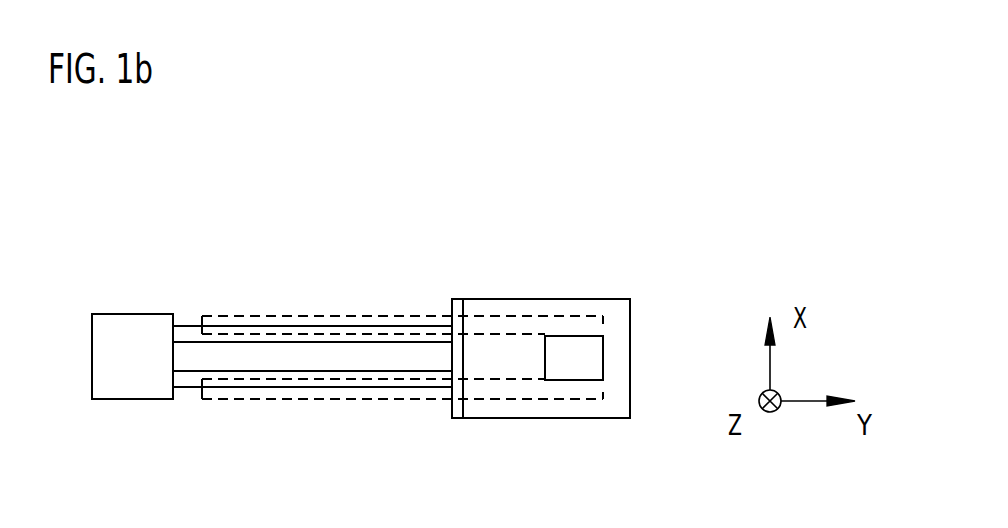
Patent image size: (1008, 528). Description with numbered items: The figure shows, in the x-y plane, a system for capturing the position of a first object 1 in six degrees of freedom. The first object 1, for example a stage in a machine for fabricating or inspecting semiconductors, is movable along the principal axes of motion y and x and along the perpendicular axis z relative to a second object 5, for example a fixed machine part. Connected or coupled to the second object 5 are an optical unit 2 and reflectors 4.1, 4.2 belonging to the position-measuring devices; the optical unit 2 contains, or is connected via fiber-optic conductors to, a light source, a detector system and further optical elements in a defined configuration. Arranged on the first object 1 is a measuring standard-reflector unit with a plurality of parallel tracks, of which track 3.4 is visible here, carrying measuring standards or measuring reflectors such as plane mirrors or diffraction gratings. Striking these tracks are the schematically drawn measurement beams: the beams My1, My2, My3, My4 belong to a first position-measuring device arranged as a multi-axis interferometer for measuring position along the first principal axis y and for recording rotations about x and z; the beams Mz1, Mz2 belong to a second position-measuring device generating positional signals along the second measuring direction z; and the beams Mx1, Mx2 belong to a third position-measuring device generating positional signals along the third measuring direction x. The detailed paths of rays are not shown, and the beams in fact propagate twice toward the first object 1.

The first object 1 is at (617, 312).
The optical unit 2 is at (108, 377).
The track 3.4 is at (463, 367).
The reflector 4.1 is at (426, 323).
The reflector 4.2 is at (418, 397).
The second object 5 is at (582, 361).
The measurement beam My4 is at (190, 343).
The measurement beam My3 is at (328, 322).
The measurement beam Mx2 is at (312, 268).
The measurement beam Mz2 is at (312, 268).
The measurement beam My2 is at (217, 372).
The measurement beam My1 is at (330, 388).
The measurement beam Mx1 is at (312, 449).
The measurement beam Mz1 is at (312, 449).